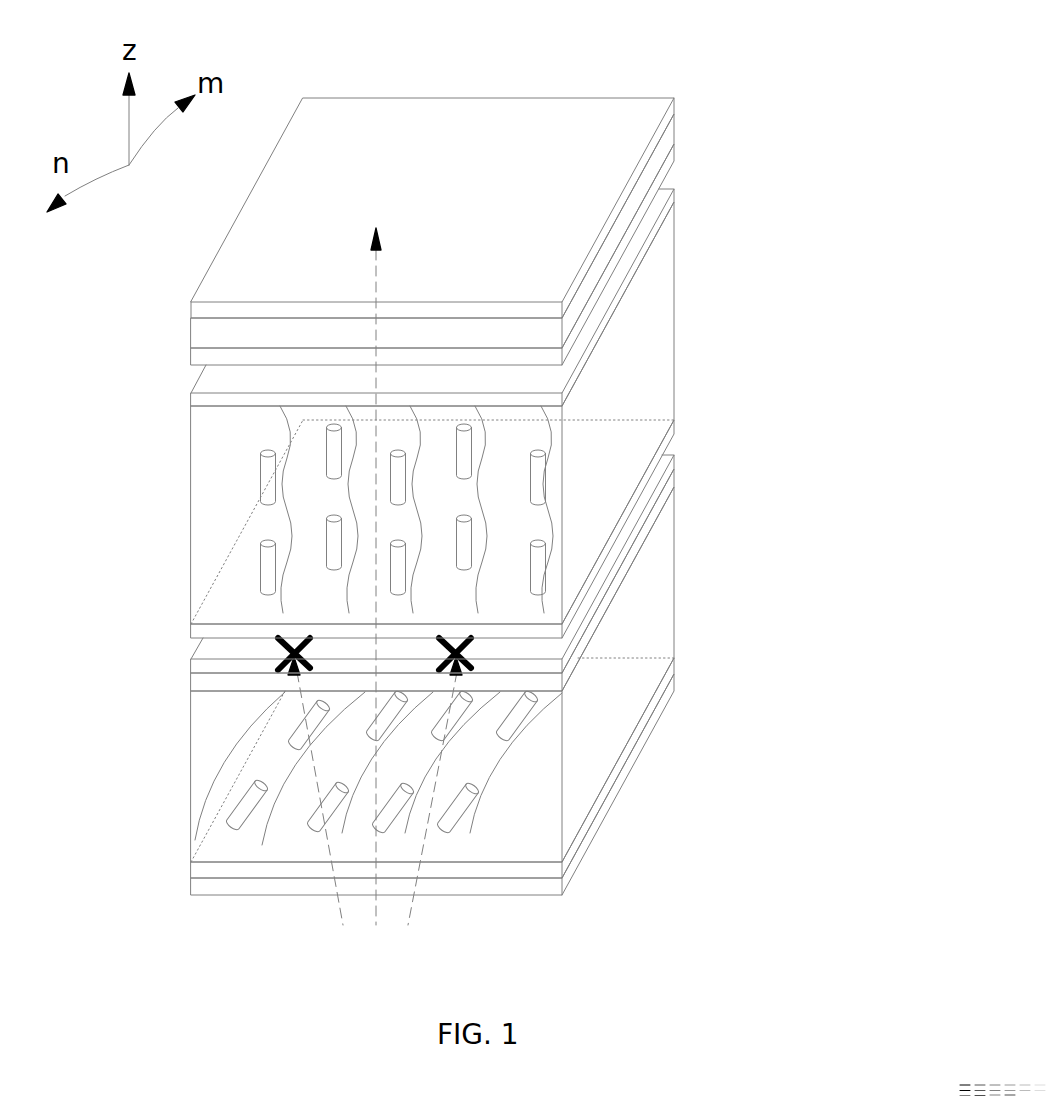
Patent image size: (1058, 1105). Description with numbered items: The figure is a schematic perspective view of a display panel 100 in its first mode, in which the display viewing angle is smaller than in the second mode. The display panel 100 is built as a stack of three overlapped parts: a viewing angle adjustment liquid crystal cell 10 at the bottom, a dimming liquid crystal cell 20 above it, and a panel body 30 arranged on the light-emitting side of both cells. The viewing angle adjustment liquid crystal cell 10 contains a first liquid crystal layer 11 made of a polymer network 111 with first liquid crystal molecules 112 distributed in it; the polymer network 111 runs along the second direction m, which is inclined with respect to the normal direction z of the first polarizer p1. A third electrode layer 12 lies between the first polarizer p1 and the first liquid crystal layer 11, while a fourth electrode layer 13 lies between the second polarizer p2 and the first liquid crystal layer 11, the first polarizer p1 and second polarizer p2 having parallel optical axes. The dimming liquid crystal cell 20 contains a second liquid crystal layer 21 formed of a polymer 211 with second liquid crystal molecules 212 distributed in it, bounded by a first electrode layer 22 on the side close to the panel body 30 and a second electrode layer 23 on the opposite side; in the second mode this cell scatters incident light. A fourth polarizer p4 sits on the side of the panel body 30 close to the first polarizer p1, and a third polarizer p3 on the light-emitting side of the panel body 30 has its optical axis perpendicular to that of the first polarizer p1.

The display panel 100 is at (806, 88).
The third polarizer p3 is at (635, 177).
The panel body 30 is at (617, 238).
The fourth polarizer p4 is at (588, 313).
The dimming liquid crystal cell 20 is at (555, 413).
The first electrode layer 22 is at (590, 353).
The second liquid crystal layer 21 is at (513, 413).
The second liquid crystal molecules 212 is at (543, 470).
The polymer 211 is at (583, 527).
The second electrode layer 23 is at (515, 529).
The second polarizer p2 is at (605, 592).
The viewing angle adjustment liquid crystal cell 10 is at (543, 673).
The third electrode layer 12 is at (585, 643).
The first liquid crystal layer 11 is at (503, 674).
The first liquid crystal molecules 112 is at (523, 716).
The polymer network 111 is at (540, 766).
The fourth electrode layer 13 is at (502, 768).
The first polarizer p1 is at (570, 873).